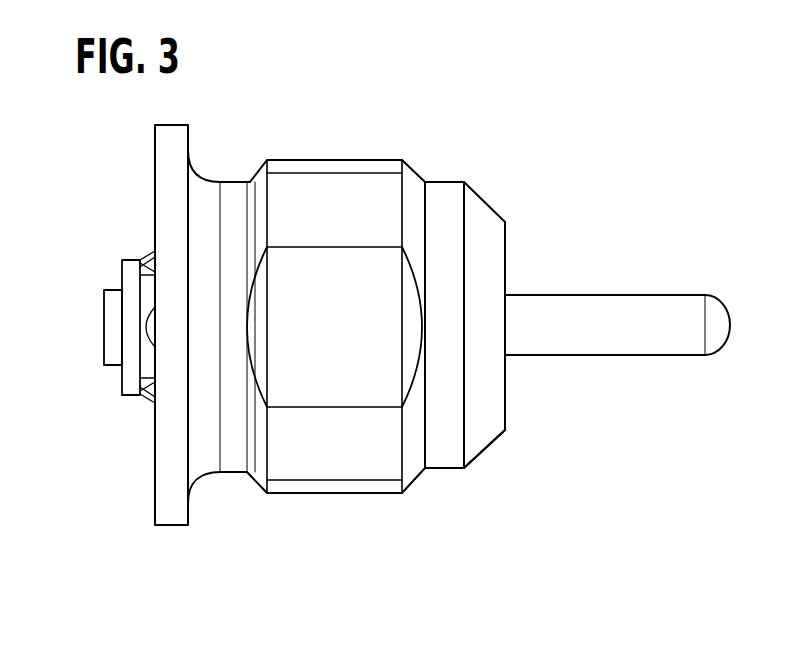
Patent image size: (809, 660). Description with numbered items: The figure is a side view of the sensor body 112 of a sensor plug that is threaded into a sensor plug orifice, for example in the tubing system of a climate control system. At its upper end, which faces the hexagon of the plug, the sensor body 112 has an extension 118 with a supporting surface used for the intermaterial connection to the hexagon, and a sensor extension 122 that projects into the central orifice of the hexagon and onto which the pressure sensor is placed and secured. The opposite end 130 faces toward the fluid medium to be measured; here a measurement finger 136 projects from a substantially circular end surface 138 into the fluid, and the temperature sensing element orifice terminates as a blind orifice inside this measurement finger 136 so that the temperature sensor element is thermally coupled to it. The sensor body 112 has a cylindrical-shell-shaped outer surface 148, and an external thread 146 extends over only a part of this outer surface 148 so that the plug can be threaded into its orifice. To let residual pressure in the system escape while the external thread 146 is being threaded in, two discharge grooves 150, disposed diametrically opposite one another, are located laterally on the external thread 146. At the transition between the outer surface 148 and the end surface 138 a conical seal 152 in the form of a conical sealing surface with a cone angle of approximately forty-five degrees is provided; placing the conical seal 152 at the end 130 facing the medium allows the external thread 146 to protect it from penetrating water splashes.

The sensor body 112 is at (410, 182).
The extension 118 is at (172, 515).
The sensor extension 122 is at (130, 385).
The end 130 is at (555, 205).
The measurement finger 136 is at (657, 307).
The end surface 138 is at (519, 408).
The external thread 146 is at (367, 163).
The cylindrical-shell-shaped outer surface 148 is at (330, 496).
The discharge grooves 150 is at (300, 290).
The conical seal 152 is at (483, 448).